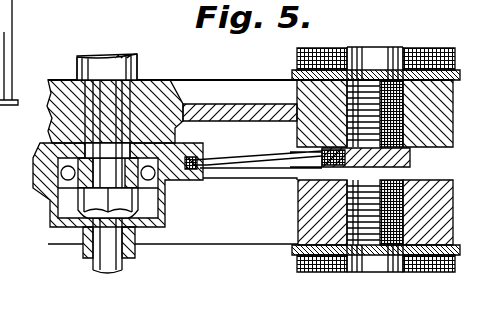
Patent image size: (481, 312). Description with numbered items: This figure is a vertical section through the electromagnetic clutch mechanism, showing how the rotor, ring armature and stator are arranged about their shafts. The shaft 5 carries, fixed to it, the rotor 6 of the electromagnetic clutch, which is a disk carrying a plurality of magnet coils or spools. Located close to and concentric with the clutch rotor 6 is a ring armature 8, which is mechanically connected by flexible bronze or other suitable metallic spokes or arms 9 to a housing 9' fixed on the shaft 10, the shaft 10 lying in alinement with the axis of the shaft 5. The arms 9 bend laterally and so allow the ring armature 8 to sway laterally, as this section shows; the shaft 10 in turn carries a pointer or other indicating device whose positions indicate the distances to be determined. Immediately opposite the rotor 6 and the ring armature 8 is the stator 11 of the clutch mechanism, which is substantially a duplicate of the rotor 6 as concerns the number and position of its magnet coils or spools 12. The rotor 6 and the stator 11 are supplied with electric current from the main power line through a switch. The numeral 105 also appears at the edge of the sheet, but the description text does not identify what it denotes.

The adjacent figure element 105 is at (0, 27).
The shaft 5 is at (172, 63).
The rotor 6 is at (312, 98).
The ring armature 8 is at (410, 160).
The flexible spokes or arms 9 is at (253, 184).
The housing 9' is at (109, 186).
The shaft 10 is at (103, 256).
The stator 11 is at (315, 215).
The magnet coils or spools 12 is at (298, 262).